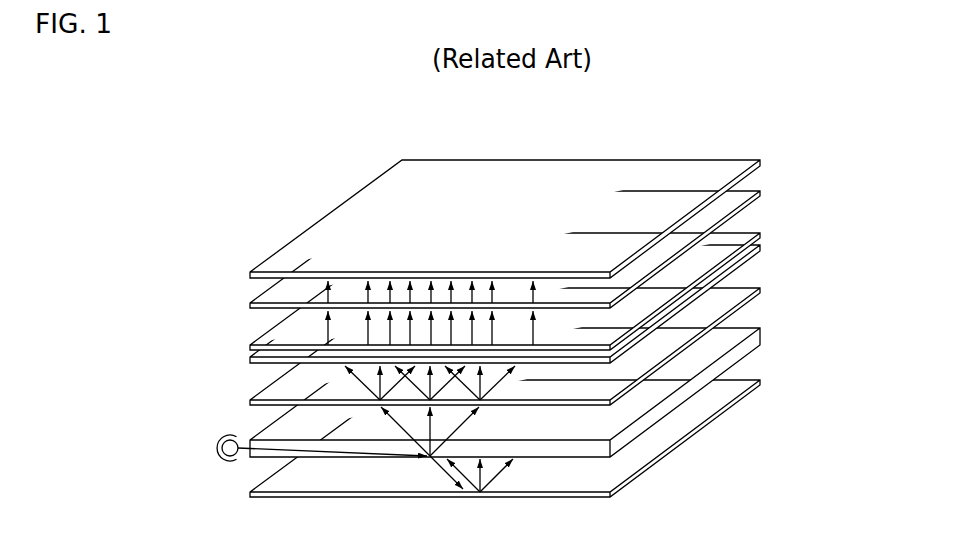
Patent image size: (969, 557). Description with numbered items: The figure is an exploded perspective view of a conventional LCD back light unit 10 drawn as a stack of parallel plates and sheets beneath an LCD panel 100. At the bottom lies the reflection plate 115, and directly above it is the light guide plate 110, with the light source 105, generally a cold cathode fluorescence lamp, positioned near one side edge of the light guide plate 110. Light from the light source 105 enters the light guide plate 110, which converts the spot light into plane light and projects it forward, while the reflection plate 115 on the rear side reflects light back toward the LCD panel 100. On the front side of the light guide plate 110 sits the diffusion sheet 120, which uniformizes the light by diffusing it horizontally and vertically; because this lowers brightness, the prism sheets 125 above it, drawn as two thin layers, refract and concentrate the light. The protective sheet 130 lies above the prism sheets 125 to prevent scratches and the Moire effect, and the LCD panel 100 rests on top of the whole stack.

The backlight unit (related art) 10 is at (803, 132).
The LCD panel 100 is at (572, 175).
The protective sheet 130 is at (758, 196).
The prism sheets 125 is at (760, 251).
The diffusion sheet 120 is at (758, 291).
The light guide plate 110 is at (761, 340).
The reflection plate 115 is at (761, 382).
The light source 105 is at (218, 442).